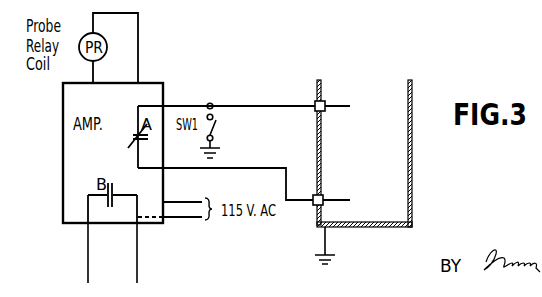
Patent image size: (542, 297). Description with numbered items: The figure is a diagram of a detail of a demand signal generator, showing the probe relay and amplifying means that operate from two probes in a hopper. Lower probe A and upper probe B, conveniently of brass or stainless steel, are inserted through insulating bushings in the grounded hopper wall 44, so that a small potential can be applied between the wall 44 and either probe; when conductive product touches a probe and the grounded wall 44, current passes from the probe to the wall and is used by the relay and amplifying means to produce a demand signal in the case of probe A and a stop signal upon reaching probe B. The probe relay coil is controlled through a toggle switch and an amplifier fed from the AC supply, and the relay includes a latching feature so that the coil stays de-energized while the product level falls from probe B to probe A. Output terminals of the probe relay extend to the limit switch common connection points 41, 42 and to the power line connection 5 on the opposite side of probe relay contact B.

The power line connection 5 is at (190, 218).
The limit switch common connection point 41 is at (88, 265).
The limit switch common connection point 42 is at (420, 165).
The hopper wall 44 is at (317, 149).